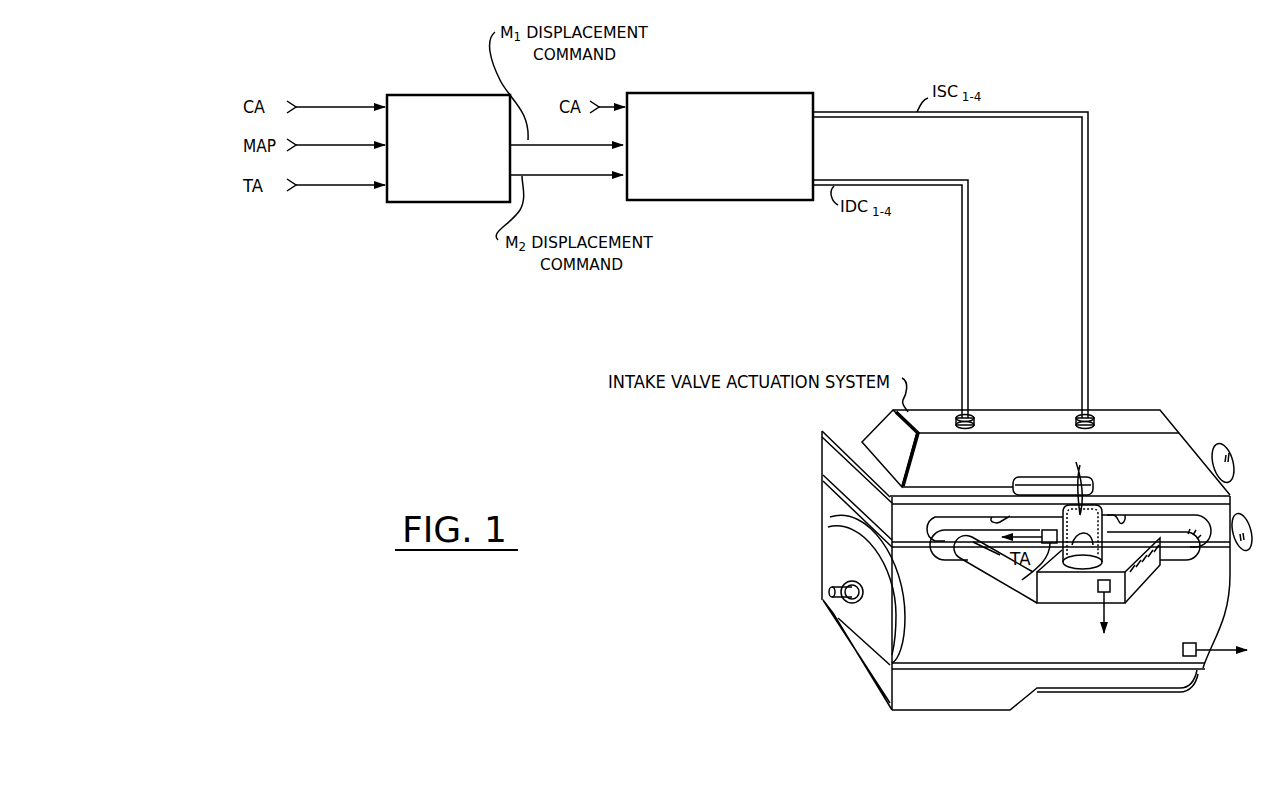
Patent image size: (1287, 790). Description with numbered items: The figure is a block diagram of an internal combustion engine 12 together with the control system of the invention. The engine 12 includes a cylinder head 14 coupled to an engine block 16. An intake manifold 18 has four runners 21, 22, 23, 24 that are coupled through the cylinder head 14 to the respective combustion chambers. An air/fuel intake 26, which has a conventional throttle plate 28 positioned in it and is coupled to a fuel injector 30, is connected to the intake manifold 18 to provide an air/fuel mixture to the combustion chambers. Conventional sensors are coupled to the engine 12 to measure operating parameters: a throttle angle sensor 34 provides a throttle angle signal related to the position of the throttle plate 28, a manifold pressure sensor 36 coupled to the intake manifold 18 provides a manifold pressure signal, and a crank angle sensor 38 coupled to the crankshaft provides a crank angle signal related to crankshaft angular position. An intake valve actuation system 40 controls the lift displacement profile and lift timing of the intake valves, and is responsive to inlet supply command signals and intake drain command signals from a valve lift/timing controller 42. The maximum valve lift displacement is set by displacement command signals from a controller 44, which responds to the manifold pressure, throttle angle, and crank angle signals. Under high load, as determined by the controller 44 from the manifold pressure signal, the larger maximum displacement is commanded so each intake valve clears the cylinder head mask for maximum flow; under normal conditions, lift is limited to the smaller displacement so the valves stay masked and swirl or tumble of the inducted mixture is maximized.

The internal combustion engine 12 is at (1222, 412).
The cylinder head 14 is at (1237, 520).
The engine block 16 is at (1233, 571).
The intake manifold 18 is at (1037, 604).
The runner 21 is at (963, 518).
The runner 22 is at (1002, 515).
The runner 23 is at (1120, 522).
The runner 24 is at (1148, 518).
The air/fuel intake 26 is at (1107, 518).
The throttle plate 28 is at (1083, 548).
The fuel injector 30 is at (1082, 510).
The throttle angle sensor 34 is at (1003, 584).
The manifold pressure sensor 36 is at (1098, 592).
The crank angle sensor 38 is at (1192, 613).
The intake valve actuation system 40 is at (1183, 437).
The valve lift/timing controller 42 is at (762, 93).
The controller 44 is at (430, 95).